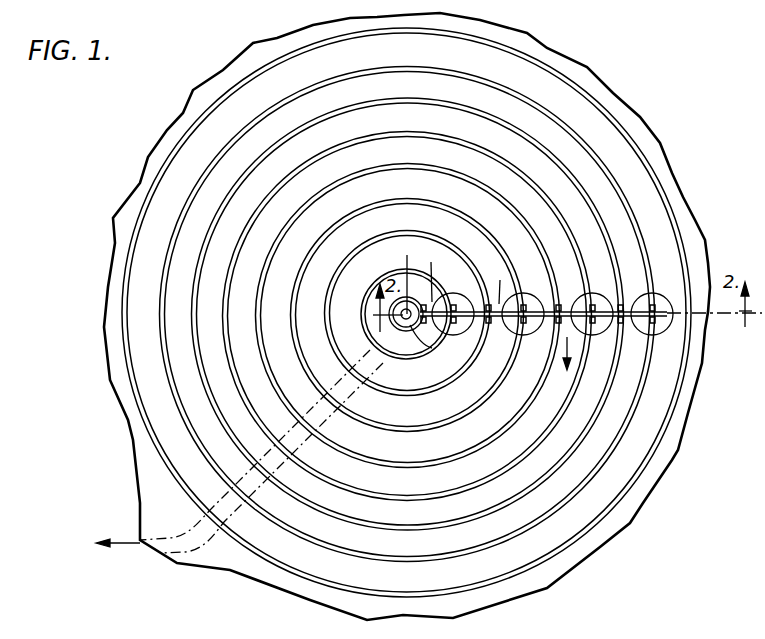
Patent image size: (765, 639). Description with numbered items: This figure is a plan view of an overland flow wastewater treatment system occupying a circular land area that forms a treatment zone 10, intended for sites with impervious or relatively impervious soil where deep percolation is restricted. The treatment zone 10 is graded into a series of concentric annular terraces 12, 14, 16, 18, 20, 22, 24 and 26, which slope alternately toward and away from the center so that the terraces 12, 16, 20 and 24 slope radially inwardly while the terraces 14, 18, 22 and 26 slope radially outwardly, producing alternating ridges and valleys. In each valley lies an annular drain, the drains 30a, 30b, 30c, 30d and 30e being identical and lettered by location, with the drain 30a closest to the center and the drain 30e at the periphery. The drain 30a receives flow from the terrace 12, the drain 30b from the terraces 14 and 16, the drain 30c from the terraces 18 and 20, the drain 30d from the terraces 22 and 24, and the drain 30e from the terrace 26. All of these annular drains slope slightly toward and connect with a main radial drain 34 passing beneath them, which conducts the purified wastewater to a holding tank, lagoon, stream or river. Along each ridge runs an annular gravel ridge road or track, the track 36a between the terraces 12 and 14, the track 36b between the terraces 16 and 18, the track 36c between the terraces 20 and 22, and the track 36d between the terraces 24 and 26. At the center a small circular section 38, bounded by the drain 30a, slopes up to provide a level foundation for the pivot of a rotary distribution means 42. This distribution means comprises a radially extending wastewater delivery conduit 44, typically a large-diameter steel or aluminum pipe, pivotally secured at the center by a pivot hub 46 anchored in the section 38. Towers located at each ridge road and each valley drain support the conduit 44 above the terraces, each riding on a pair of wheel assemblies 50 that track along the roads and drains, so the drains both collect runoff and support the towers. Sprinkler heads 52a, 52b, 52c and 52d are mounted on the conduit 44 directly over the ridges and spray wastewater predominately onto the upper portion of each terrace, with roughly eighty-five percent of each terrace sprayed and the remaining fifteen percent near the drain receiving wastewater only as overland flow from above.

The treatment zone 10 is at (634, 126).
The annular terrace 12 is at (410, 352).
The annular terrace 14 is at (407, 384).
The annular terrace 16 is at (428, 422).
The annular terrace 18 is at (428, 454).
The annular terrace 20 is at (432, 489).
The annular terrace 22 is at (434, 520).
The annular terrace 24 is at (438, 554).
The annular terrace 26 is at (433, 589).
The drain 30a is at (416, 330).
The drain 30b is at (395, 230).
The drain 30c is at (388, 166).
The drain 30d is at (403, 93).
The drain 30e is at (535, 58).
The main radial drain 34 is at (194, 526).
The ridge road or track 36a is at (369, 282).
The ridge road or track 36b is at (397, 199).
The ridge road or track 36c is at (388, 132).
The ridge road or track 36d is at (390, 67).
The circular section 38 is at (393, 322).
The rotary distribution means 42 is at (434, 273).
The wastewater delivery conduit 44 is at (501, 283).
The pivot hub 46 is at (406, 275).
The wheel assemblies 50 is at (432, 327).
The sprinkler head 52a is at (457, 293).
The sprinkler head 52b is at (525, 292).
The sprinkler head 52c is at (592, 292).
The sprinkler head 52d is at (655, 292).